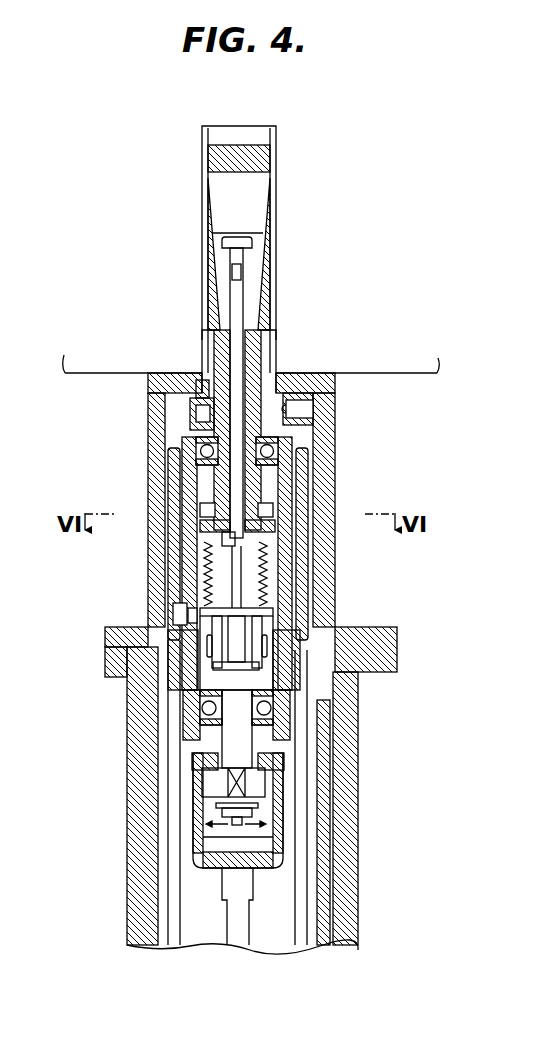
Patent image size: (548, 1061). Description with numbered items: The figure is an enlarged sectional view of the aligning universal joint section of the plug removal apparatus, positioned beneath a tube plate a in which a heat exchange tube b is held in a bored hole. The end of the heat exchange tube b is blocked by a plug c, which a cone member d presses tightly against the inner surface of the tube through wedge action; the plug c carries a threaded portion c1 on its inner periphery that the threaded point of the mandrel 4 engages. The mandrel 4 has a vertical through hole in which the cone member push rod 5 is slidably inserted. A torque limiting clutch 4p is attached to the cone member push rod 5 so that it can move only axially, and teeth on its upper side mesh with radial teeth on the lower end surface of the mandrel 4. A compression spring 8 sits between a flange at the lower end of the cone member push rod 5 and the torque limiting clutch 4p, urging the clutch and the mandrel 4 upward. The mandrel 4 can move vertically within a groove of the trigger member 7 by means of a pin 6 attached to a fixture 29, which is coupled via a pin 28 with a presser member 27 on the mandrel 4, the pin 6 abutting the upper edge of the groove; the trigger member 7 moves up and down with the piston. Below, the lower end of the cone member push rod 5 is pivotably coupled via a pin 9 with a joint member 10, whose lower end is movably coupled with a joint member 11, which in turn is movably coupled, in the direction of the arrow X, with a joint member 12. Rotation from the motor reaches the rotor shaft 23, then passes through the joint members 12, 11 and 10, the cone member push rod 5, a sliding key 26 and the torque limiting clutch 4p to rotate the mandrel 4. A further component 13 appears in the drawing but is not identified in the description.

The tube plate a is at (425, 368).
The heat exchange tube b is at (278, 140).
The plug c is at (216, 160).
The threaded portion c1 is at (208, 354).
The cone member d is at (252, 205).
The mandrel 4 is at (254, 352).
The torque limiting clutch 4p is at (290, 526).
The cone member push rod 5 is at (239, 296).
The pin 6 is at (176, 615).
The trigger member 7 is at (176, 476).
The compression spring 8 is at (262, 573).
The pin 9 is at (203, 658).
The joint member 10 is at (263, 683).
The joint member 11 is at (257, 782).
The joint member 12 is at (280, 838).
The ring 13 is at (310, 412).
The rotor shaft 23 is at (243, 929).
The sliding key 26 is at (222, 543).
The presser member 27 is at (198, 387).
The pin 28 is at (194, 412).
The fixture 29 is at (194, 448).
The arrow X is at (223, 828).